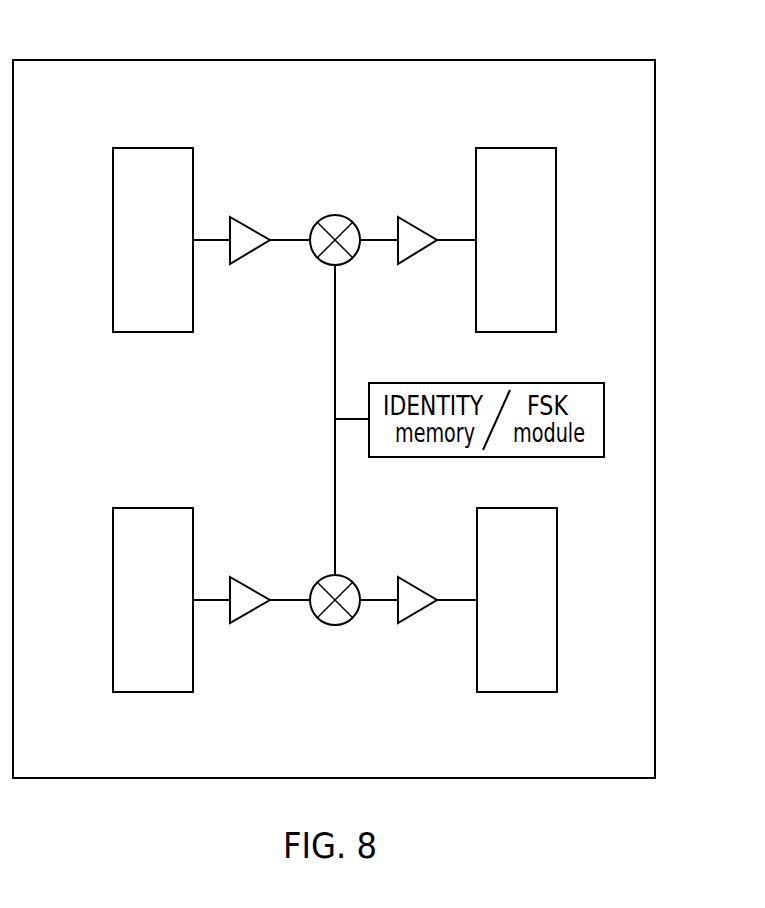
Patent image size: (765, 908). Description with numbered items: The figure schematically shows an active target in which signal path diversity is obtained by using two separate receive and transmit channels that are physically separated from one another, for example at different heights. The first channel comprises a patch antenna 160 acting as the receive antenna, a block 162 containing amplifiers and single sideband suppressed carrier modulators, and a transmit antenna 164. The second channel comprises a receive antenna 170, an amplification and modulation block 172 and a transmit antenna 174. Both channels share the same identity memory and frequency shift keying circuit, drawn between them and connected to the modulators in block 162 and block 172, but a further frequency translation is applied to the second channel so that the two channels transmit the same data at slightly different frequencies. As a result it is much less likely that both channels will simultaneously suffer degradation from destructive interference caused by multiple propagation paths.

The patch antenna 160 is at (153, 692).
The block 162 is at (440, 650).
The transmit antenna 164 is at (530, 692).
The receive antenna 170 is at (153, 148).
The amplification and modulation block 172 is at (440, 192).
The transmit antenna 174 is at (517, 148).